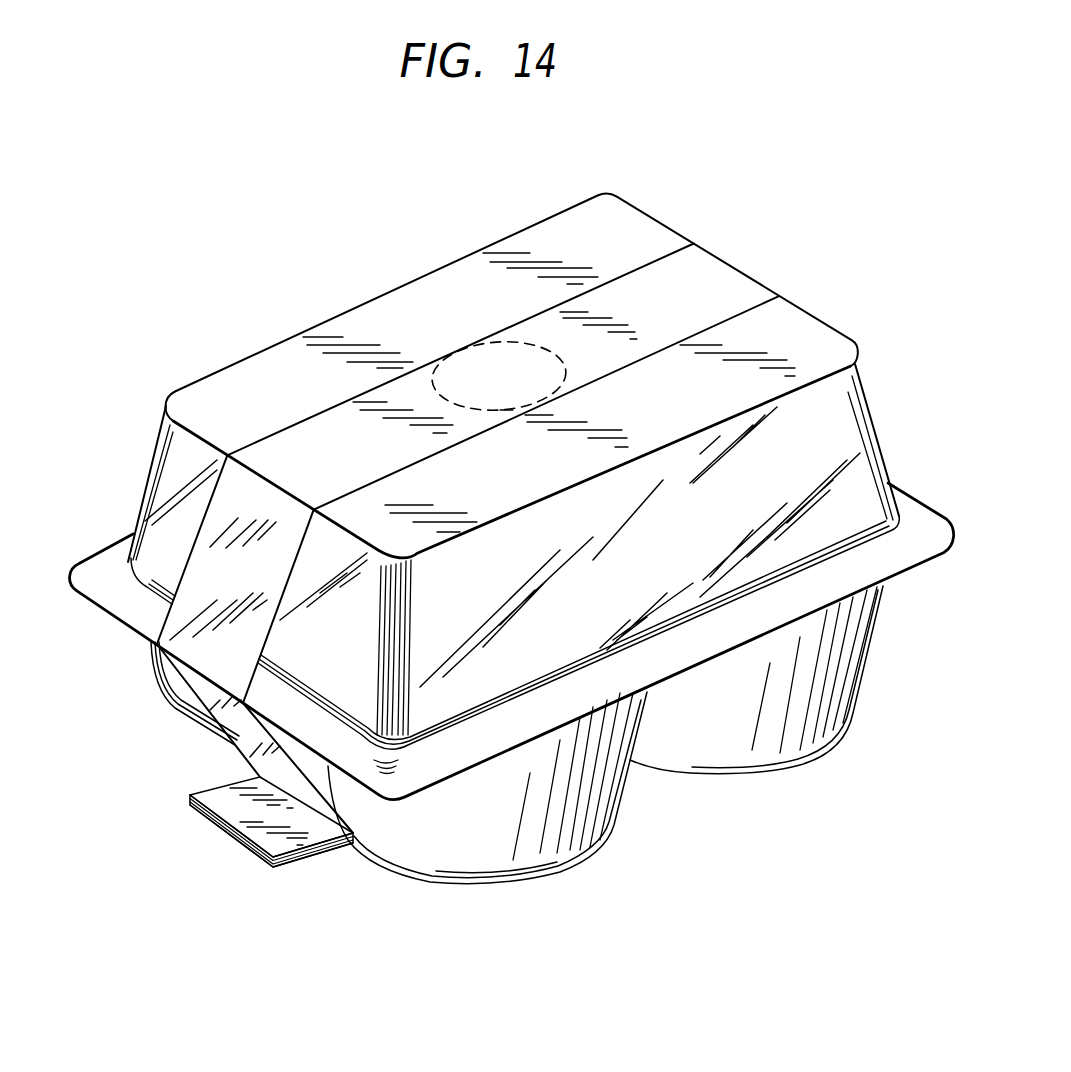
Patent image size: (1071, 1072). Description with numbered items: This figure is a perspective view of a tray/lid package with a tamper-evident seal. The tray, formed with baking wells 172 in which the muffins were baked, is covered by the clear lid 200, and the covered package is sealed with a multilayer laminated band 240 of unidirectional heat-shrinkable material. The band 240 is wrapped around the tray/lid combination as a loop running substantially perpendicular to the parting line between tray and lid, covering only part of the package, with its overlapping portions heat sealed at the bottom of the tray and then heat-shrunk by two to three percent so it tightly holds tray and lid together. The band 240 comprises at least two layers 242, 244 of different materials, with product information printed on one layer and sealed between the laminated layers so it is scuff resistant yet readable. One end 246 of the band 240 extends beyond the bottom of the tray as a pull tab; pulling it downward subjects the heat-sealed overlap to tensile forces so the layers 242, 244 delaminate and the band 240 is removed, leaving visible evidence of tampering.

The clear lid 200 is at (428, 308).
The multilayer laminated band 240 is at (712, 282).
The baking wells 172 is at (843, 677).
The end of the band 246 is at (230, 861).
The second layer 244 is at (275, 847).
The first layer 242 is at (302, 858).